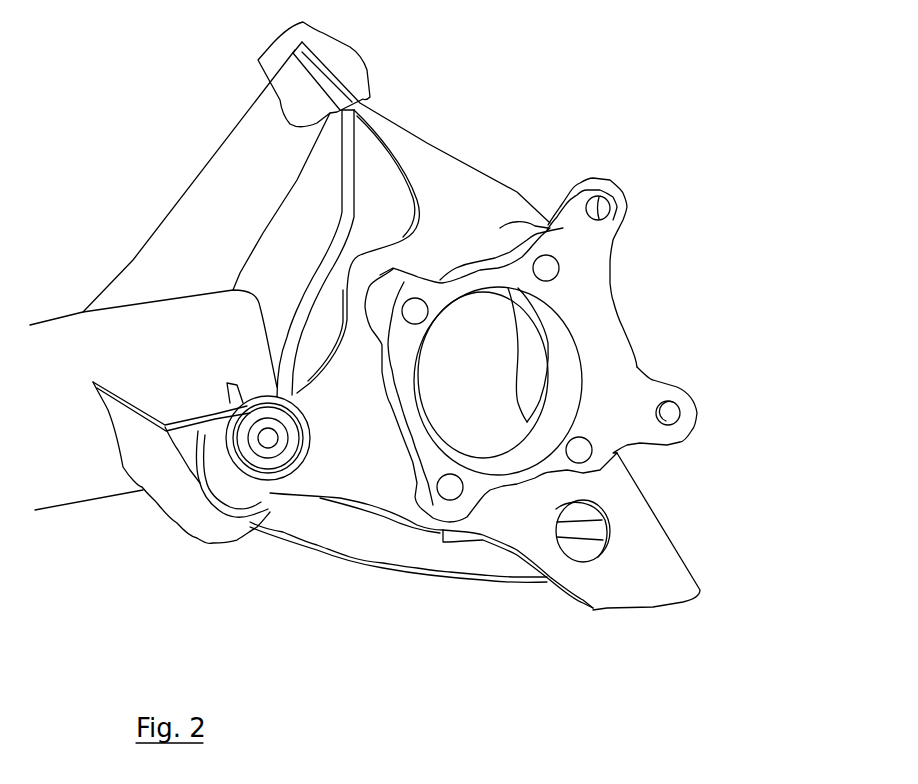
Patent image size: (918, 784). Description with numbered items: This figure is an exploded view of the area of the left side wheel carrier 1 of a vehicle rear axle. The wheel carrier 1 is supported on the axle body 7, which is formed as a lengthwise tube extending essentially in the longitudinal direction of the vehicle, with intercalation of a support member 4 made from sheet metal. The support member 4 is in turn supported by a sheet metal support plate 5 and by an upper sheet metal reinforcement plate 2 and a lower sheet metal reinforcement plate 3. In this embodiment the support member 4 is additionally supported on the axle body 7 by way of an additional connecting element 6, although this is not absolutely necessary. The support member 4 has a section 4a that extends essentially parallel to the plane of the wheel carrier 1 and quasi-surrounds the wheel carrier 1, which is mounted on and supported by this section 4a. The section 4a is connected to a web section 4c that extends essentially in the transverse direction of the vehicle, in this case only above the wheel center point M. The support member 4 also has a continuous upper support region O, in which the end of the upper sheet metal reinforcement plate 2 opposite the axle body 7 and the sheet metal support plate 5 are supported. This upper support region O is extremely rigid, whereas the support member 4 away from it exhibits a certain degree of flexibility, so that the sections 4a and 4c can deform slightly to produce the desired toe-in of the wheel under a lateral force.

The wheel carrier 1 is at (498, 247).
The sheet metal reinforcement plate 2 is at (227, 218).
The sheet metal reinforcement plate 3 is at (380, 547).
The support member 4 is at (531, 350).
The section 4a is at (637, 518).
The web section 4c is at (427, 143).
The sheet metal support plate 5 is at (305, 170).
The connecting element 6 is at (263, 467).
The axle body 7 is at (82, 413).
The wheel center point M is at (485, 370).
The upper support region O is at (368, 93).